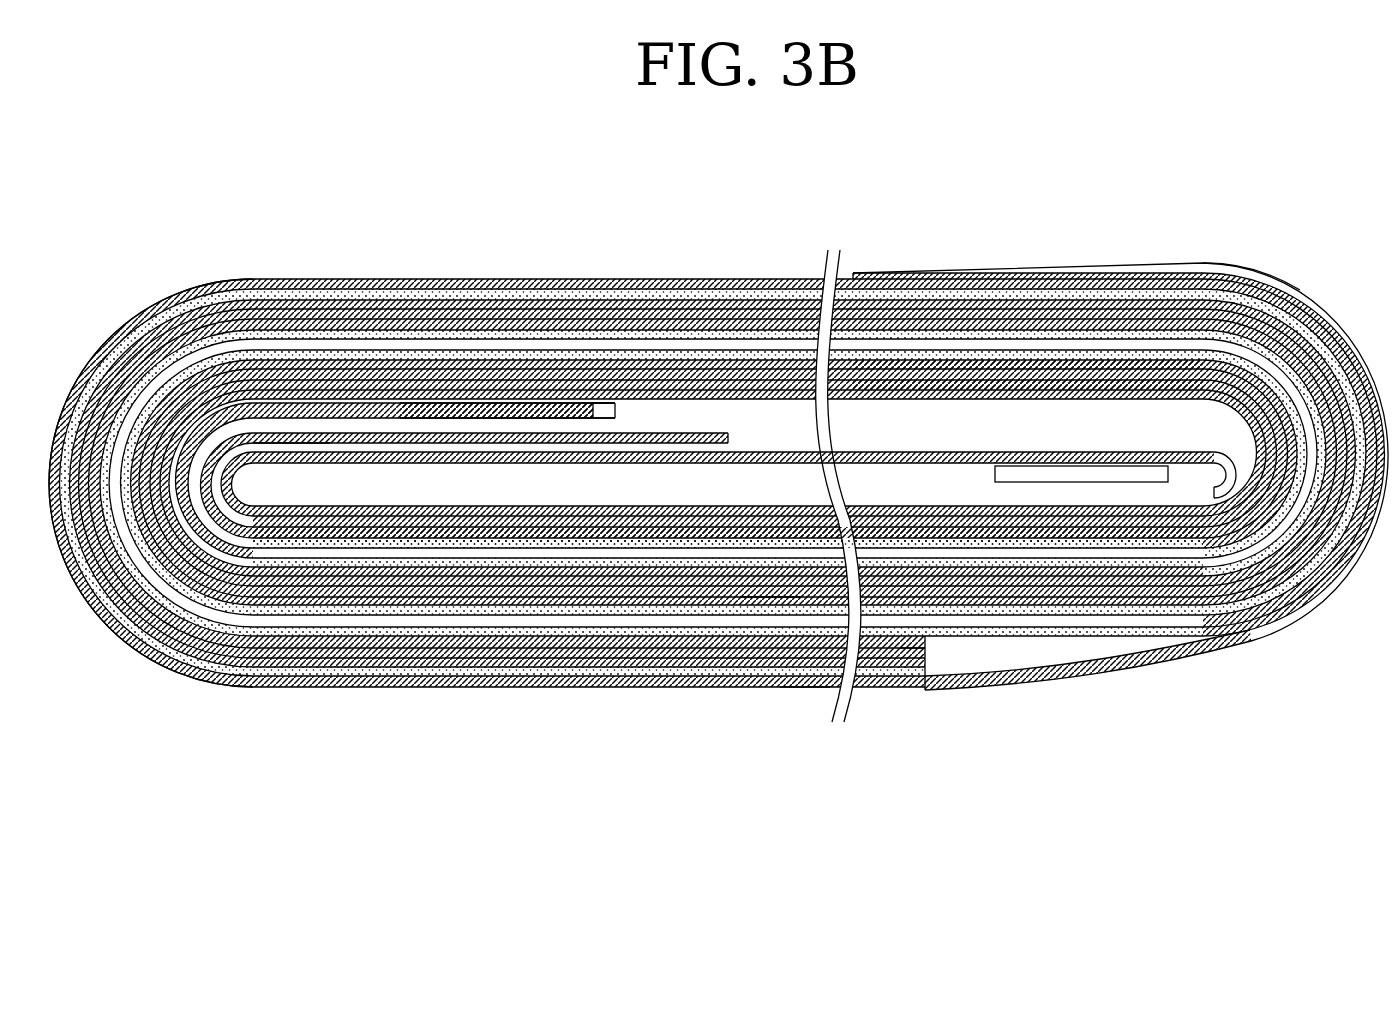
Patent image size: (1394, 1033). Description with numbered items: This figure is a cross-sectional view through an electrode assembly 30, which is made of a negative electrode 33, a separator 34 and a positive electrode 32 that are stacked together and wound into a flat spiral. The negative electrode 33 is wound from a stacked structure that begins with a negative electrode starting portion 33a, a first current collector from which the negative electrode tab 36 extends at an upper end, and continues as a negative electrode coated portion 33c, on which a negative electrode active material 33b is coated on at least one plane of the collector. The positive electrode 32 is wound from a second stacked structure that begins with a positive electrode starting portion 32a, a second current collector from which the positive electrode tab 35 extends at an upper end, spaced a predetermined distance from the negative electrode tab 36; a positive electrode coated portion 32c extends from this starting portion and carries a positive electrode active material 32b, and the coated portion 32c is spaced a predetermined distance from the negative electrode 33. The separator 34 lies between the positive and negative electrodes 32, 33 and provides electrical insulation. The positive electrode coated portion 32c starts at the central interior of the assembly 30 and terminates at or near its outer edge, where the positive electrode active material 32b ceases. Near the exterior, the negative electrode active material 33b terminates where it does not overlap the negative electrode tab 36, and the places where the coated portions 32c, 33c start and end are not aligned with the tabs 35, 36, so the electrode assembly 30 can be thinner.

The electrode assembly 30 is at (1170, 236).
The positive electrode 32 is at (528, 197).
The positive electrode starting portion 32a is at (538, 403).
The positive electrode active material 32b is at (700, 535).
The positive electrode coated portion 32c is at (770, 548).
The negative electrode 33 is at (1050, 190).
The negative electrode starting portion 33a is at (992, 452).
The negative electrode active material 33b is at (912, 362).
The negative electrode coated portion 33c is at (952, 385).
The separator 34 is at (627, 402).
The positive electrode tab 35 is at (432, 420).
The negative electrode tab 36 is at (1088, 466).